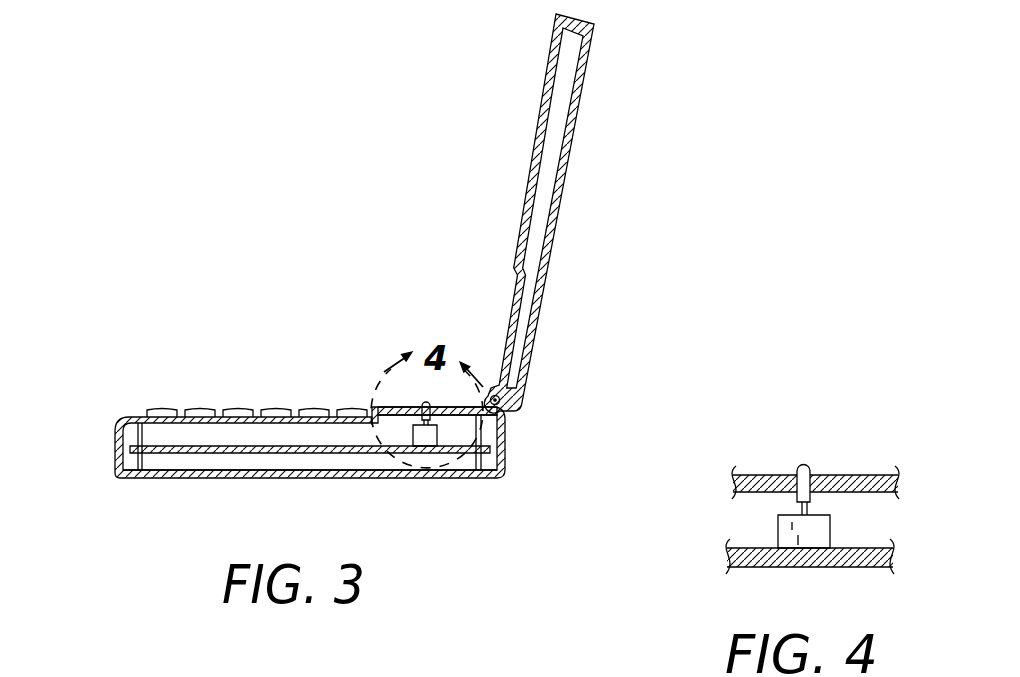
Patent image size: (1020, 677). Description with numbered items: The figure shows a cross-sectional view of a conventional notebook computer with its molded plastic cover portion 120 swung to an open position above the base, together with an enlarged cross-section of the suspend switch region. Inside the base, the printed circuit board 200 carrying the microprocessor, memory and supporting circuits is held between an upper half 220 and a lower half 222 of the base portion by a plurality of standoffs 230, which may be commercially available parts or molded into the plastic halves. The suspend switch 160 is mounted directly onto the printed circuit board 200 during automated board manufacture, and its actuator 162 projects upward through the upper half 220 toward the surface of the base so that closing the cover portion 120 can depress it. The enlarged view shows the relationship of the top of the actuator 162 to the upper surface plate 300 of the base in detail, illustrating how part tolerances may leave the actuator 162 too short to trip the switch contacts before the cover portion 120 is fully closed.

In FIG. 3, the cover portion 120 is at (562, 183).
In FIG. 3, the suspend switch 160 is at (412, 432).
In FIG. 4, the suspend switch 160 is at (786, 533).
In FIG. 3, the actuator 162 is at (420, 403).
In FIG. 4, the actuator 162 is at (806, 464).
In FIG. 3, the printed circuit board 200 is at (258, 446).
In FIG. 4, the printed circuit board 200 is at (784, 568).
In FIG. 3, the upper half 220 is at (116, 439).
In FIG. 3, the lower half 222 is at (261, 479).
In FIG. 3, the standoffs 230 is at (152, 462).
In FIG. 3, the upper plate 300 is at (456, 406).
In FIG. 4, the upper plate 300 is at (769, 473).